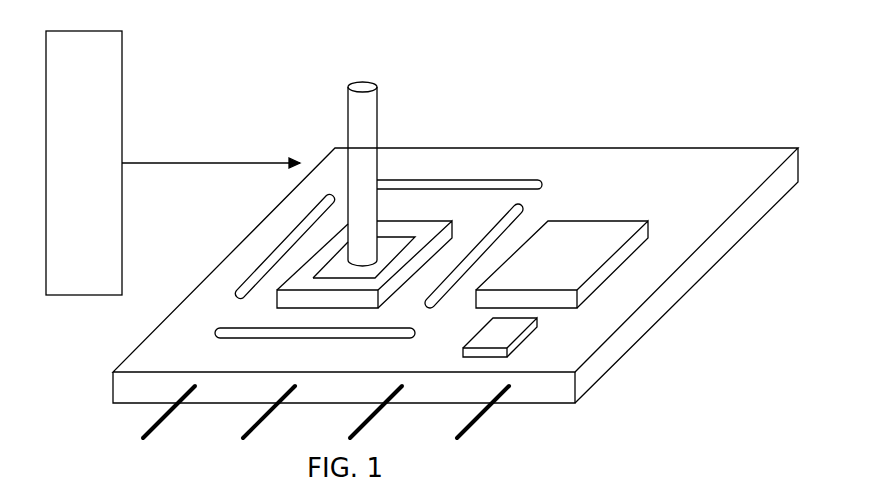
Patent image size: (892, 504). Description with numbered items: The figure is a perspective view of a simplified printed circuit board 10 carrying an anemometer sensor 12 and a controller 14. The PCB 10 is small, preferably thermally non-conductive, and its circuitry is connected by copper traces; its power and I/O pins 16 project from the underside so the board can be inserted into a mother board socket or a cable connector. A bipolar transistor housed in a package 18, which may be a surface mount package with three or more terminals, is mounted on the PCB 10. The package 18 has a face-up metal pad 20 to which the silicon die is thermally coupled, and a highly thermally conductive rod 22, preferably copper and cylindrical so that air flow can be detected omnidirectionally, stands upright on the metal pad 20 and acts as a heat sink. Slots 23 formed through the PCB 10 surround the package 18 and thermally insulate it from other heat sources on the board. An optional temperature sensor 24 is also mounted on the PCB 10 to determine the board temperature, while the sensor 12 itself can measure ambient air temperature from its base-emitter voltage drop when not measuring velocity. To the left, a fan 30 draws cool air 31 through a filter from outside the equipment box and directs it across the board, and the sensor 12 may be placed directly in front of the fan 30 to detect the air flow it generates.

The printed circuit board 10 is at (665, 148).
The anemometer sensor 12 is at (322, 116).
The controller 14 is at (583, 218).
The power and I/O pins 16 is at (492, 405).
The package 18 is at (295, 302).
The metal pad 20 is at (393, 245).
The thermally conductive rod 22 is at (378, 123).
The slots 23 is at (450, 180).
The temperature sensor 24 is at (537, 322).
The fan 30 is at (121, 87).
The cool air 31 is at (178, 163).